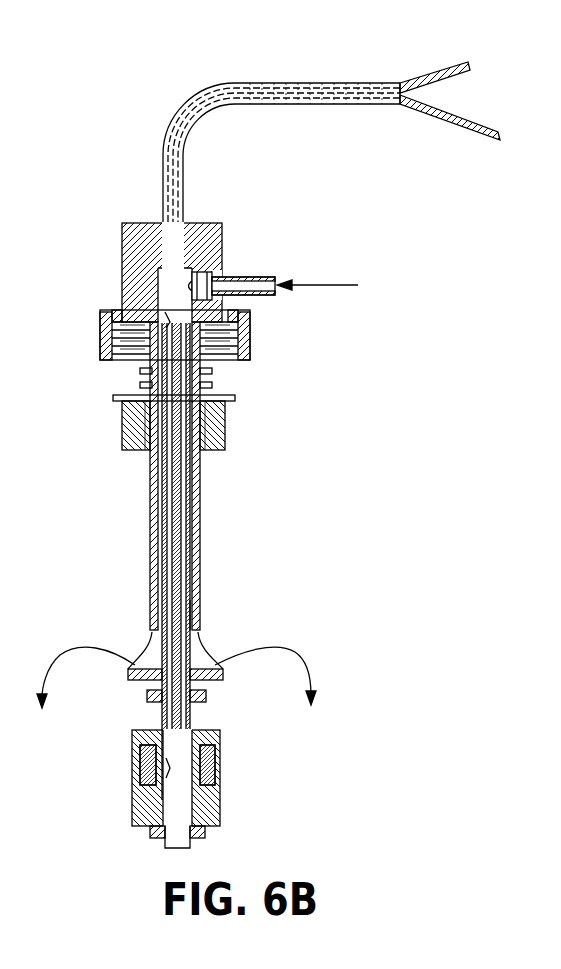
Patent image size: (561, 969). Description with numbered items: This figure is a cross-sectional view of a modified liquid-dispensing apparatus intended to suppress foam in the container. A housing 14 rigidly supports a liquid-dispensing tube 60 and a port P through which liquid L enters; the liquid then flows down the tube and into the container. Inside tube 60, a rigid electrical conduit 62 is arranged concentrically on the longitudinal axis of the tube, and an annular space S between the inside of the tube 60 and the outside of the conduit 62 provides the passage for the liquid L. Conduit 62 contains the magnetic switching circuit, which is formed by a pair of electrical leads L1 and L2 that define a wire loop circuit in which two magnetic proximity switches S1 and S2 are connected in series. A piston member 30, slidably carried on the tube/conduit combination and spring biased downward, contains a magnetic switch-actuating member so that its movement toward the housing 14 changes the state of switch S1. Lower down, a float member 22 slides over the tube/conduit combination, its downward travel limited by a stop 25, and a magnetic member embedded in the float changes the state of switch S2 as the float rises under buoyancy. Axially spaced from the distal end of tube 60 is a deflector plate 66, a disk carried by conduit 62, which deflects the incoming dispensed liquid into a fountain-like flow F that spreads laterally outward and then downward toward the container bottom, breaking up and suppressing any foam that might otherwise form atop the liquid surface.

The housing 14 is at (215, 242).
The port P is at (250, 276).
The liquid L is at (323, 285).
The magnetic proximity switch S1 is at (165, 318).
The liquid-dispensing tube 60 is at (150, 513).
The rigid electrical conduit 62 is at (190, 531).
The electrical lead L1 is at (437, 72).
The electrical lead L2 is at (470, 118).
The space S is at (192, 624).
The flow F is at (286, 646).
The deflector plate 66 is at (223, 682).
The piston member 30 is at (226, 430).
The magnetic proximity switch S2 is at (165, 765).
The float member 22 is at (222, 796).
The stop 25 is at (150, 833).